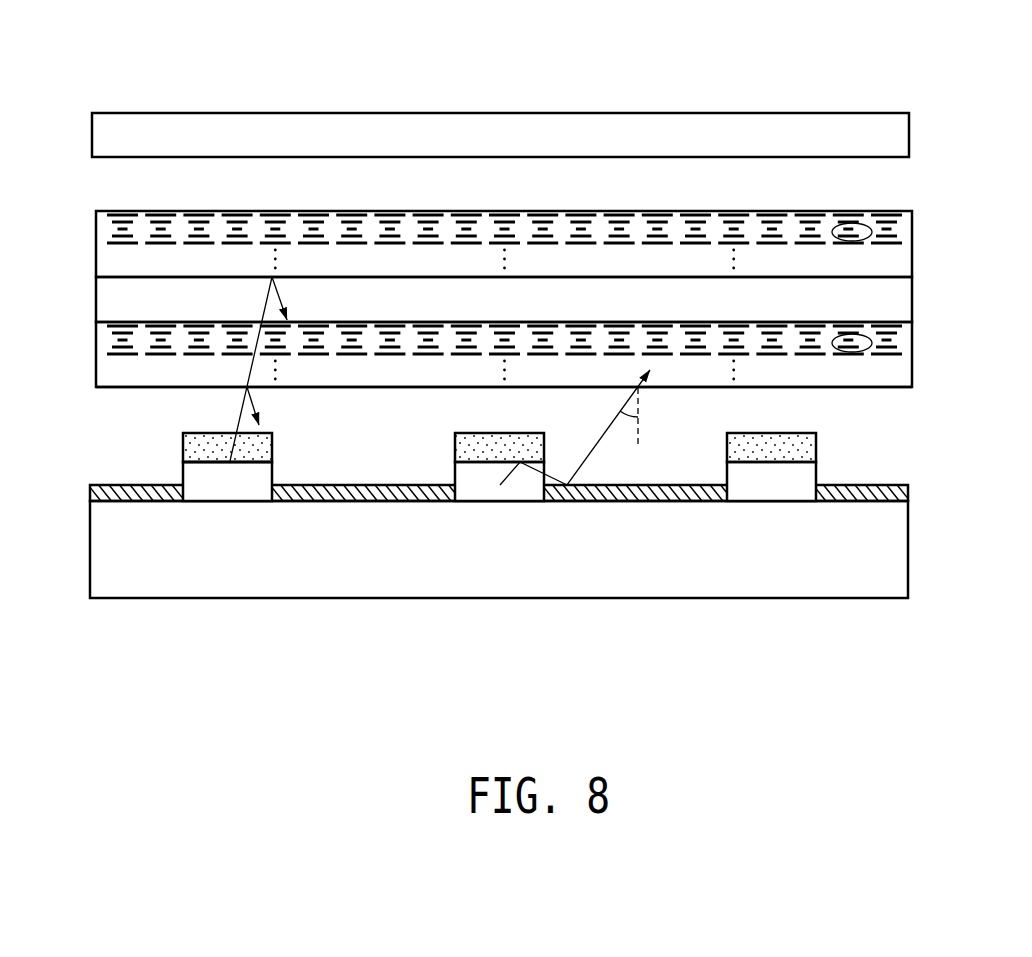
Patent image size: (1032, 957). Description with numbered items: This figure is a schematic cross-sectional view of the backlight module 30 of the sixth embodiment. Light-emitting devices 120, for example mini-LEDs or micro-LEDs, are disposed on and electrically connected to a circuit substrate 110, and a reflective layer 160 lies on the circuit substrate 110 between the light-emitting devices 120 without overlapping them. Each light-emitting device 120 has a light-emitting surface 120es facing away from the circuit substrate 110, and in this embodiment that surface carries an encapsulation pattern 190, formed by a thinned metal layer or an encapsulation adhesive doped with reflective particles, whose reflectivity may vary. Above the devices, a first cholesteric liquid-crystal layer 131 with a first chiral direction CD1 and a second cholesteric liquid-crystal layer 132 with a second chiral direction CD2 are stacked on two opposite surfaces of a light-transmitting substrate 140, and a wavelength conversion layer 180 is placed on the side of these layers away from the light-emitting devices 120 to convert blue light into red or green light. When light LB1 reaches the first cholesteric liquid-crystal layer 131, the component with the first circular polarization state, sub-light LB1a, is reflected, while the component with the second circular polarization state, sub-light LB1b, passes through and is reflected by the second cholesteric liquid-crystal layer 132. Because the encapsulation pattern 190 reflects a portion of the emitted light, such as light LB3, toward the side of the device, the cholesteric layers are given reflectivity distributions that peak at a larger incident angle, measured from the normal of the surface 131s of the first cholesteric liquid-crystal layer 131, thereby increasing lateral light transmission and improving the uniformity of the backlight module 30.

The wavelength conversion layer 180 is at (900, 133).
The second cholesteric liquid-crystal layer 132 is at (897, 259).
The light-transmitting substrate 140 is at (897, 305).
The first cholesteric liquid-crystal layer 131 is at (892, 365).
The second chiral direction CD2 is at (856, 239).
The first chiral direction CD1 is at (847, 350).
The surface of the first cholesteric liquid-crystal layer facing the light-emitting 131s is at (852, 391).
The circuit substrate 110 is at (893, 572).
The reflective layer 160 is at (900, 487).
The light-emitting devices 120 is at (765, 485).
The encapsulation pattern 190 is at (205, 447).
The light-emitting surface 120es is at (213, 460).
The light LB1 is at (233, 447).
The sub-light LB1a is at (251, 400).
The sub-light LB1b is at (279, 289).
The light LB3 is at (619, 412).
The backlight module 30 is at (987, 677).